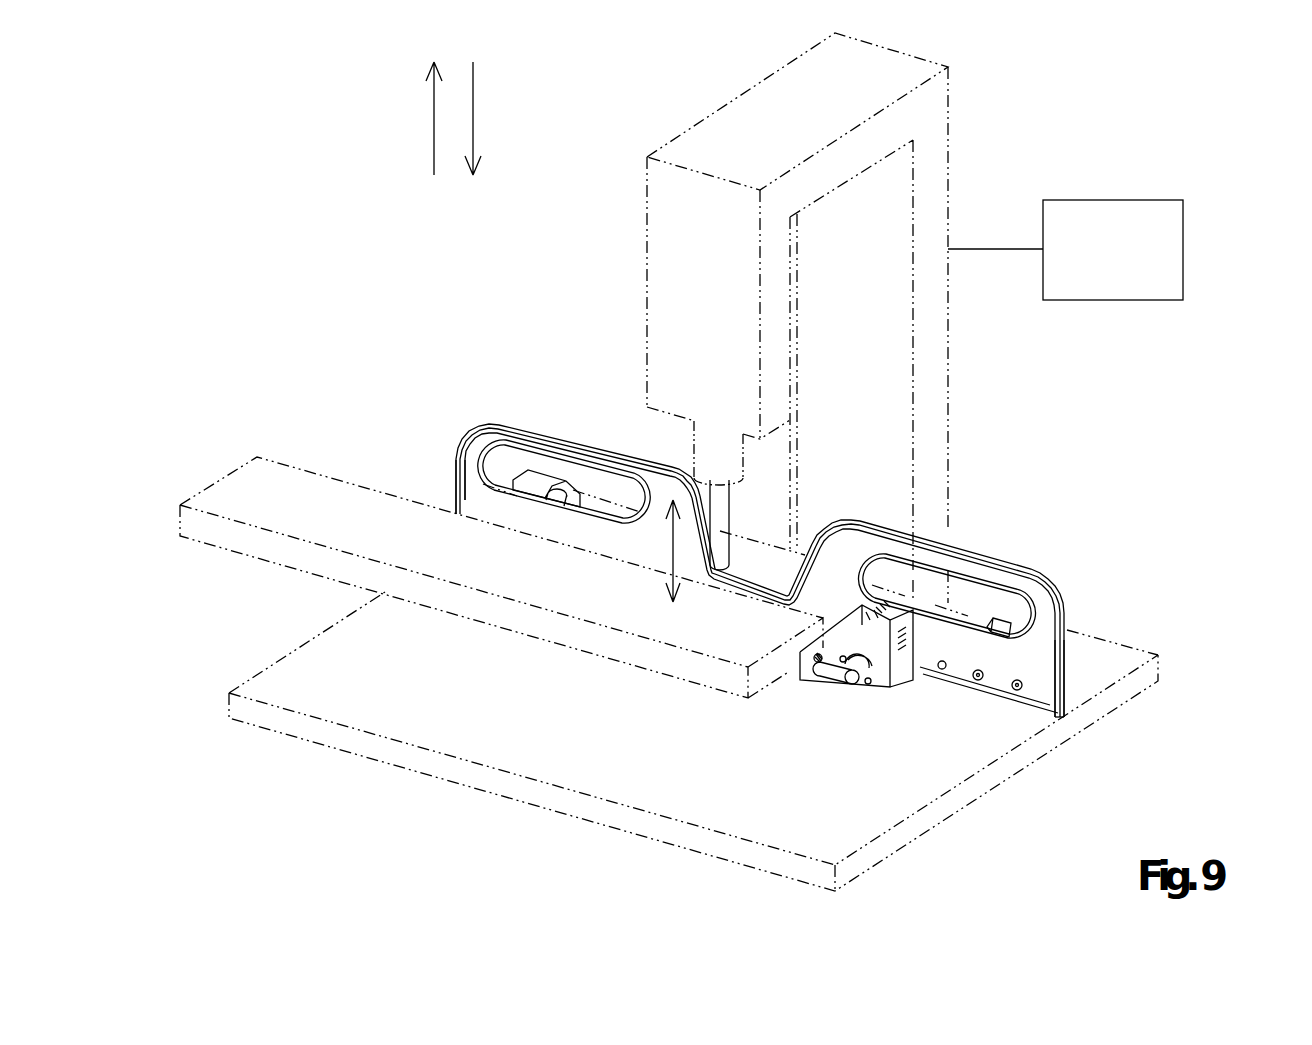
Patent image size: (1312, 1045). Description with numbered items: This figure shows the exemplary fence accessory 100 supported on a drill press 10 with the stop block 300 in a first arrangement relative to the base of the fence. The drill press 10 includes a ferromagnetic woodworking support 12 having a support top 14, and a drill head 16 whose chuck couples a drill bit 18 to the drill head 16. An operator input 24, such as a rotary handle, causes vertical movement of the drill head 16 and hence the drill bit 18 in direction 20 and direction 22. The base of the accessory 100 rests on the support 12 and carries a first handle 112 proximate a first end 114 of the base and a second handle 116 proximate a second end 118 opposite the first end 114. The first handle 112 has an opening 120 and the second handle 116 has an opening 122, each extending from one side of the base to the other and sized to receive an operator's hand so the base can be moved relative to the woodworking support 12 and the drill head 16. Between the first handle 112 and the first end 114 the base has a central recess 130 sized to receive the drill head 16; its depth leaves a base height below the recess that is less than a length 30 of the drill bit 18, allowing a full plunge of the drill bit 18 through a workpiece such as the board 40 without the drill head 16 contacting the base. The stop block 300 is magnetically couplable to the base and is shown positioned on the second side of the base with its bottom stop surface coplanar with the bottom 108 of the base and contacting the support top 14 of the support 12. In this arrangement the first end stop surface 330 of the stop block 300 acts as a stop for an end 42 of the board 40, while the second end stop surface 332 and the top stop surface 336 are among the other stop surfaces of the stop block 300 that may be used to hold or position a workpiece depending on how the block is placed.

The drill press 10 is at (1050, 112).
The ferromagnetic woodworking support 12 is at (693, 743).
The support top 14 is at (628, 748).
The drill head 16 is at (687, 445).
The drill bit 18 is at (736, 494).
The direction 20 is at (434, 119).
The direction 22 is at (473, 117).
The operator input 24 is at (1184, 248).
The length 30 is at (665, 574).
The board 40 is at (501, 603).
The end 42 is at (766, 688).
The accessory 100 is at (1087, 497).
The bottom 108 is at (1012, 713).
The first handle 112 is at (505, 429).
The first end 114 is at (440, 473).
The second handle 116 is at (1012, 627).
The second end 118 is at (1075, 682).
The opening 120 is at (565, 478).
The opening 122 is at (993, 593).
The central recess 130 is at (767, 563).
The stop block 300 is at (897, 619).
The first end stop surface 330 is at (818, 666).
The second end stop surface 332 is at (1014, 630).
The top stop surface 336 is at (883, 612).